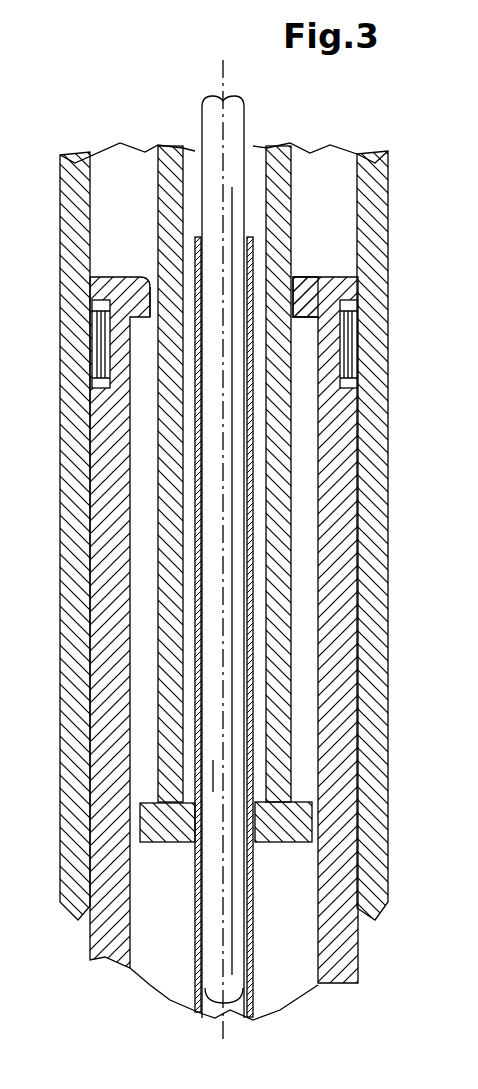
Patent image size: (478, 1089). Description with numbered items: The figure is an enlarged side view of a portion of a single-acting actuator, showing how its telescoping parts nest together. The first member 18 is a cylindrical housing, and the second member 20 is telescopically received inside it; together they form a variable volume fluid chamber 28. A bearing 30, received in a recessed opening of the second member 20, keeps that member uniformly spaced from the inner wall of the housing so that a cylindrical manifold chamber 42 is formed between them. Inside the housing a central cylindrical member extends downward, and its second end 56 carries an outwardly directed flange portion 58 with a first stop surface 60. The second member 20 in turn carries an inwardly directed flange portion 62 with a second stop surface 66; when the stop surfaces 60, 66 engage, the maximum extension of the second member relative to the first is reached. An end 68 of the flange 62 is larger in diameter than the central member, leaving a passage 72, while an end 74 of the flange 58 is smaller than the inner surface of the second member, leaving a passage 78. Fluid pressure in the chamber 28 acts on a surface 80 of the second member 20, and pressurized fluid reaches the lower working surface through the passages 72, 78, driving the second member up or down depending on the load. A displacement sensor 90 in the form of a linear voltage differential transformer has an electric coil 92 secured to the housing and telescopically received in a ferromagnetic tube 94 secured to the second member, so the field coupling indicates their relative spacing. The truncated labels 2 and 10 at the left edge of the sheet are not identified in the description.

The pump assembly 2 is at (52, 557).
The pump 10 is at (10, 153).
The first member 18 is at (78, 668).
The second member 20 is at (108, 945).
The variable volume fluid chamber 28 is at (122, 186).
The bearing 30 is at (100, 348).
The cylindrical manifold chamber 42 is at (90, 470).
The second end 56 is at (266, 845).
The outwardly directed flange portion 58 is at (150, 818).
The first stop surface 60 is at (318, 800).
The inwardly directed flange portion 62 is at (320, 300).
The second stop surface 66 is at (312, 322).
The end of flange 62 68 is at (152, 272).
The passage 72 is at (299, 273).
The end of flange 58 74 is at (133, 842).
The passage 78 is at (130, 800).
The surface 80 is at (332, 275).
The displacement sensor 90 is at (251, 237).
The electric coil 92 is at (206, 121).
The ferromagnetic tube 94 is at (197, 903).